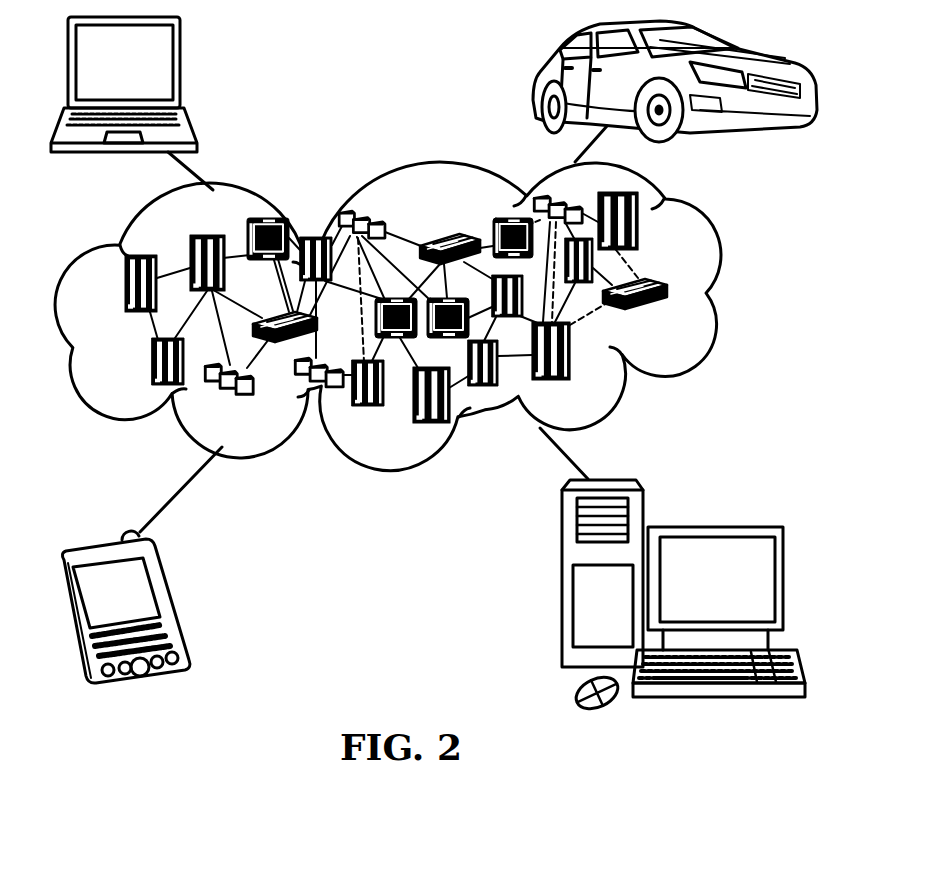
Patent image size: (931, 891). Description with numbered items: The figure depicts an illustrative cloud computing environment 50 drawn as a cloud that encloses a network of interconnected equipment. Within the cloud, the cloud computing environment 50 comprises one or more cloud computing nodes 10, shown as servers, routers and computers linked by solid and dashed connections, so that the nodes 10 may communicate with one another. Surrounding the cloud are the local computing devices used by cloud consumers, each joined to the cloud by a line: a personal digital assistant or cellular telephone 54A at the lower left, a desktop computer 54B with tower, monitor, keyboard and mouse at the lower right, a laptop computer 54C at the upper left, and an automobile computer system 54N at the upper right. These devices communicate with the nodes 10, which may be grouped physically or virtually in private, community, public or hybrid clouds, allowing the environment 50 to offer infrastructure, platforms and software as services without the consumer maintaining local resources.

The cloud computing nodes 10 is at (674, 318).
The cloud computing environment 50 is at (716, 292).
The personal digital assistant or cellular telephone 54A is at (172, 601).
The desktop computer 54B is at (714, 527).
The laptop computer 54C is at (181, 68).
The automobile computer system 54N is at (539, 83).